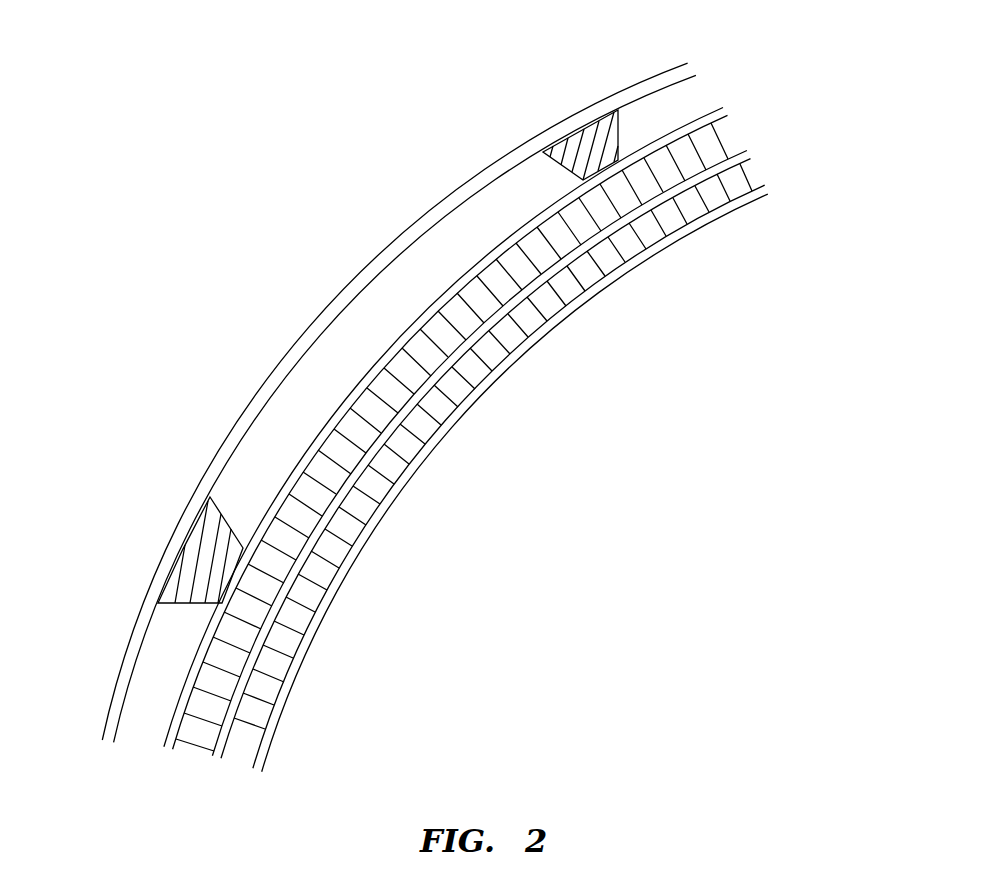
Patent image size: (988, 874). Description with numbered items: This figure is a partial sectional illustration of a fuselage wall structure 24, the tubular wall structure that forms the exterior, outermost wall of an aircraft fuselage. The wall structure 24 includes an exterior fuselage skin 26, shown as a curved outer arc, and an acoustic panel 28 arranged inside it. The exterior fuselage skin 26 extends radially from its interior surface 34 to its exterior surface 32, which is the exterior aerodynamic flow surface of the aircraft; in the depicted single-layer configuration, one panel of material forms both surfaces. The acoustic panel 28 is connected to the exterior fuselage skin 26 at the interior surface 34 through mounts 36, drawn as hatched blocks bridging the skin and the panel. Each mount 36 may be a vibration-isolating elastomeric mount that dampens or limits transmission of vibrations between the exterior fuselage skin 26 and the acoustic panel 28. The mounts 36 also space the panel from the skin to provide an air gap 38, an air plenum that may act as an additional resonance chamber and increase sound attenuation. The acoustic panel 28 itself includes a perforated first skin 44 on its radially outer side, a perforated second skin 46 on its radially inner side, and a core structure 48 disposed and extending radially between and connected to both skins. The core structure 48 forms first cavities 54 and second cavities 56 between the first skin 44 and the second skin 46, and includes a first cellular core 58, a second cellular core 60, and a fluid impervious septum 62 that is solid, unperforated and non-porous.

The fuselage wall structure 24 is at (272, 180).
The exterior fuselage skin 26 is at (284, 333).
The acoustic panel 28 is at (700, 240).
The exterior surface 32 is at (102, 723).
The interior surface 34 is at (117, 738).
The mount 36 is at (632, 116).
The air gap 38 is at (331, 372).
The perforated first skin 44 is at (742, 90).
The perforated second skin 46 is at (824, 159).
The core structure 48 is at (157, 748).
The first cavity 54 is at (340, 443).
The second cavity 56 is at (340, 552).
The first cellular core 58 is at (752, 113).
The second cellular core 60 is at (796, 144).
The septum 62 is at (780, 131).